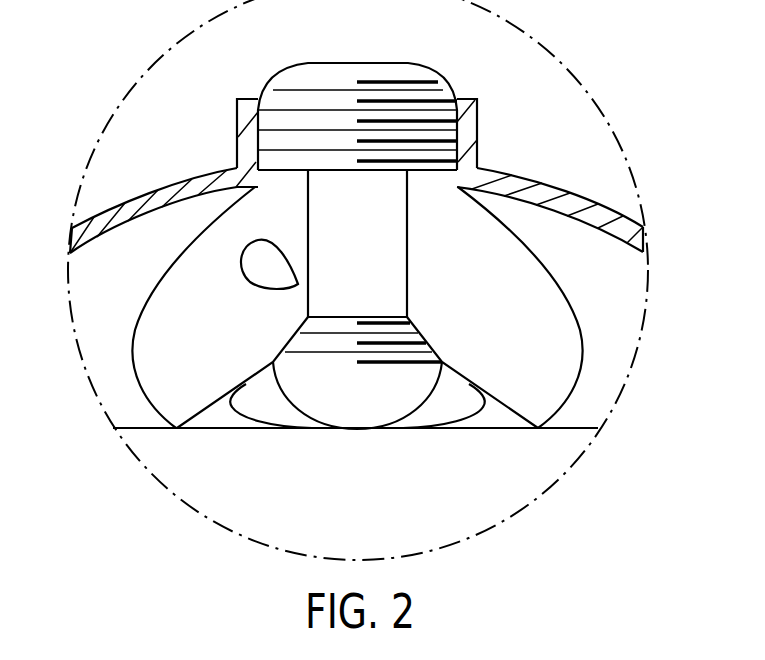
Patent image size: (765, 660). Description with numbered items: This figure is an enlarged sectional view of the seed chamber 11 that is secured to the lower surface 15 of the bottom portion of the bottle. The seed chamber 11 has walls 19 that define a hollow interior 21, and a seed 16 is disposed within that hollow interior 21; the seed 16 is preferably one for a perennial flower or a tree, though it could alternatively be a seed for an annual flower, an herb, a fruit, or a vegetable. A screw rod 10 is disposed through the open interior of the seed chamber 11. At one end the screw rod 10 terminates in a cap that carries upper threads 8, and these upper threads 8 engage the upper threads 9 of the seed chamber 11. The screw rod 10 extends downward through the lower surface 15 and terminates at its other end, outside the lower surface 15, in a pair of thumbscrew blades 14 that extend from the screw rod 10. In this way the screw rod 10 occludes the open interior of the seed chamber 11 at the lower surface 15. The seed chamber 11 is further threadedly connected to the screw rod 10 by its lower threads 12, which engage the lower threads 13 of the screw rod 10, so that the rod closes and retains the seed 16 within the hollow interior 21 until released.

The upper threads 8 is at (413, 89).
The upper threads 9 is at (307, 98).
The screw rod 10 is at (390, 223).
The seed chamber 11 is at (187, 293).
The lower threads 12 is at (423, 337).
The lower threads 13 is at (392, 362).
The thumbscrew blades 14 is at (264, 405).
The lower surface 15 is at (143, 428).
The seed 16 is at (254, 258).
The walls 19 is at (503, 222).
The hollow interior 21 is at (493, 281).